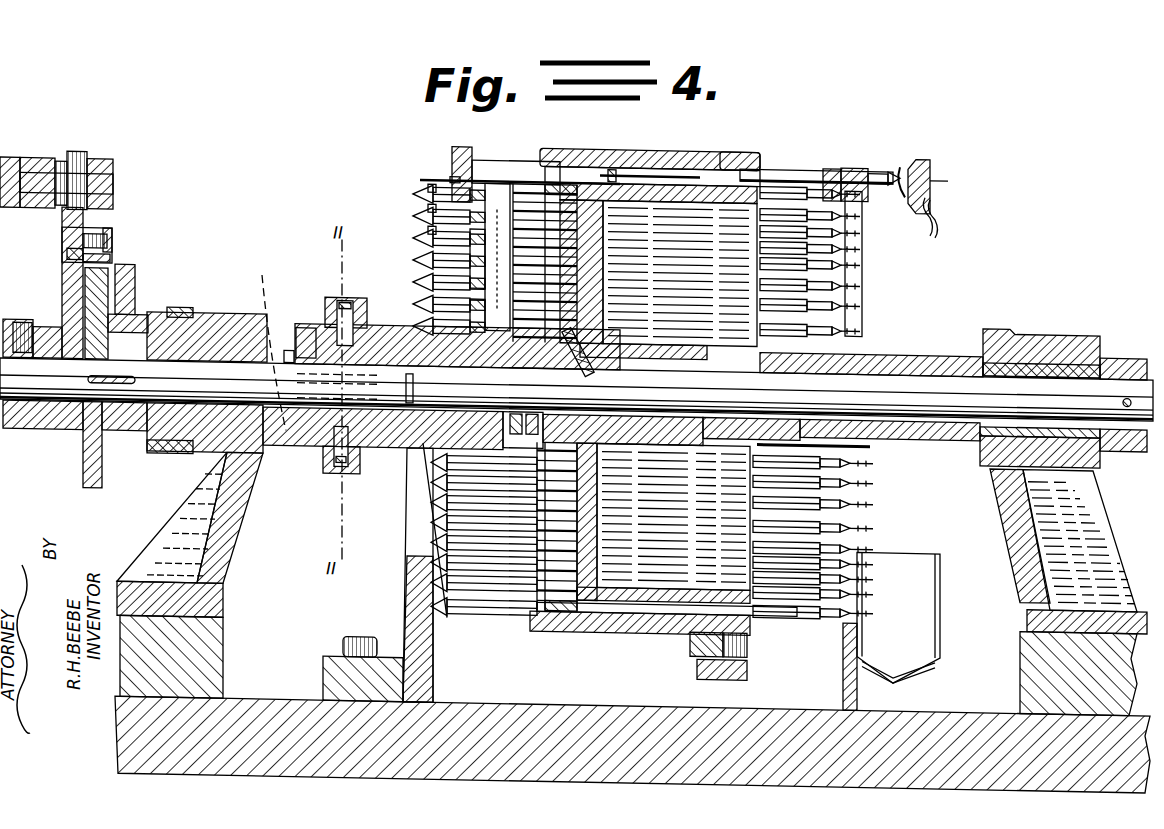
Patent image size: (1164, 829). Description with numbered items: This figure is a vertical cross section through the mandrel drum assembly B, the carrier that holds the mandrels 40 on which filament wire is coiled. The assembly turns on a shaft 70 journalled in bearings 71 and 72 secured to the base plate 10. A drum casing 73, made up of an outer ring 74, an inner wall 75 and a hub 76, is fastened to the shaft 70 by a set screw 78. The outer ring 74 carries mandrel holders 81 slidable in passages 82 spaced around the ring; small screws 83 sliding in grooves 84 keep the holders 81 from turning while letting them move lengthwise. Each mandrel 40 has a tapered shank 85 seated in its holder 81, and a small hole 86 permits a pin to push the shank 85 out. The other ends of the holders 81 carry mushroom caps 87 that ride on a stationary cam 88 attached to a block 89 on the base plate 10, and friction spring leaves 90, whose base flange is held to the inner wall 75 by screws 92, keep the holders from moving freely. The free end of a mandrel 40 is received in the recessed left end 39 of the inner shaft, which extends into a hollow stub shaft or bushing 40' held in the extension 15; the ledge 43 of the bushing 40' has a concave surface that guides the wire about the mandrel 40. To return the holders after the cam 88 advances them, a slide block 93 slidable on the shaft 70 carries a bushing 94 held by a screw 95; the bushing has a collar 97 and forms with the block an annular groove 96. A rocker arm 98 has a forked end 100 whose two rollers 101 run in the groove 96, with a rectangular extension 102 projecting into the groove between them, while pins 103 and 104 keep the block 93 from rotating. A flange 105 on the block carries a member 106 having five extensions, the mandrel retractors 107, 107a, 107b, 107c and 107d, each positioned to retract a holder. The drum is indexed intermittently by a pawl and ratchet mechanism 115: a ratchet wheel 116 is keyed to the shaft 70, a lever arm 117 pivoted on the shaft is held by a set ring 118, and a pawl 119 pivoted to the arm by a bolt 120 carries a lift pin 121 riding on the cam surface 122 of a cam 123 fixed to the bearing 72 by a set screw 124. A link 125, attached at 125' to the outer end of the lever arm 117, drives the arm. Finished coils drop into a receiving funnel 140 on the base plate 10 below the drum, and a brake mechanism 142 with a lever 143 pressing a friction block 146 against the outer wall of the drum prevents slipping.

The base plate 10 is at (668, 772).
The extension 15 is at (925, 142).
The left end of inner shaft 39 is at (951, 182).
The mandrel 40 is at (880, 348).
The hollow stub shaft or bushing 40' is at (908, 150).
The ledge 43 is at (935, 185).
The shaft 70 is at (905, 370).
The bearing 71 is at (1040, 325).
The bearing 72 is at (225, 538).
The drum casing 73 is at (670, 138).
The outer ring 74 is at (712, 140).
The inner wall 75 is at (598, 470).
The hub 76 is at (672, 424).
The set screw 78 is at (600, 335).
The mandrel holder 81 is at (790, 172).
The passage 82 is at (565, 160).
The small screw 83 is at (612, 162).
The groove 84 is at (640, 160).
The tapered shank 85 is at (868, 154).
The small hole 86 is at (835, 155).
The mushroom cap 87 is at (430, 240).
The stationary cam 88 is at (410, 580).
The block 89 is at (323, 660).
The friction spring leaf 90 is at (530, 175).
The screw 92 is at (578, 170).
The slide block 93 is at (472, 330).
The bushing 94 is at (392, 330).
The screw 95 is at (604, 300).
The annular groove 96 is at (450, 300).
The collar 97 is at (300, 322).
The rocker arm 98 is at (342, 292).
The forked end 100 is at (408, 400).
The roller 101 is at (330, 460).
The extension 102 is at (300, 410).
The pin 103 is at (264, 346).
The pin 104 is at (330, 452).
The flange 105 is at (500, 152).
The member 106 is at (470, 140).
The mandrel retractor 107 is at (487, 175).
The mandrel retractor 107a is at (455, 170).
The mandrel retractor 107b is at (433, 180).
The mandrel retractor 107c is at (433, 198).
The mandrel retractor 107d is at (430, 222).
The pawl and ratchet mechanism 115 is at (132, 206).
The ratchet wheel 116 is at (90, 470).
The lever arm 117 is at (62, 300).
The set ring 118 is at (20, 428).
The pawl 119 is at (112, 230).
The bolt 120 is at (112, 240).
The lift pin 121 is at (112, 255).
The cam surface 122 is at (108, 280).
The cam 123 is at (135, 292).
The set screw 124 is at (190, 306).
The link 125 is at (56, 157).
The pivotal attachment 125' is at (107, 164).
The receiving funnel 140 is at (920, 615).
The brake mechanism 142 is at (700, 660).
The lever 143 is at (745, 655).
The friction block 146 is at (697, 635).
The mandrel drum assembly B is at (768, 124).